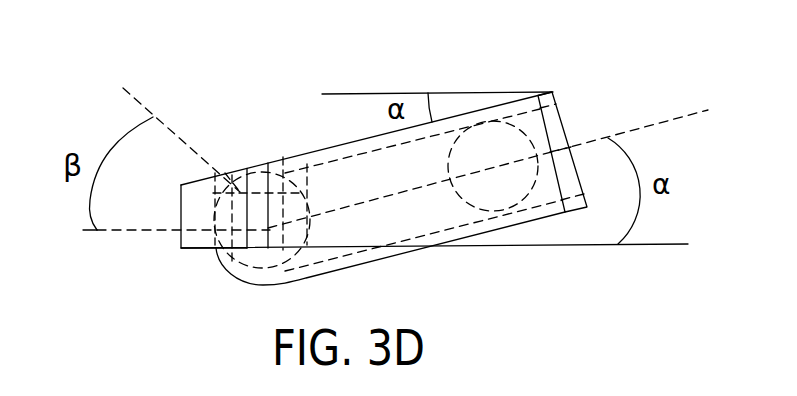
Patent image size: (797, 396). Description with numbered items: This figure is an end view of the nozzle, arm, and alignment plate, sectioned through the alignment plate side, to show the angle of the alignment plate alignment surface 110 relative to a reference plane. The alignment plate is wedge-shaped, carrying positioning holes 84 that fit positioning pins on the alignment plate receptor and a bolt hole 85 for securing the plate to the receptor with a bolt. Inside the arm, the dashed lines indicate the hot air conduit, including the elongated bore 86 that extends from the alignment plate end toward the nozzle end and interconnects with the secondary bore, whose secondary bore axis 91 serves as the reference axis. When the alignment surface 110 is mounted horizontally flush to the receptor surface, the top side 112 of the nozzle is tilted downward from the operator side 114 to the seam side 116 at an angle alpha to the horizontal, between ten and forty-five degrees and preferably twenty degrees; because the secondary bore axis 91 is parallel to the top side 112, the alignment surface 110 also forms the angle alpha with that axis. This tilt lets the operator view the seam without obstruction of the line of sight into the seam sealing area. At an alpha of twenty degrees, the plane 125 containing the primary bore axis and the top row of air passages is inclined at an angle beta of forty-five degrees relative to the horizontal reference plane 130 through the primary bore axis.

The positioning holes 84 is at (253, 166).
The bolt hole 85 is at (283, 157).
The elongated bore 86 is at (576, 117).
The secondary bore axis 91 is at (501, 159).
The alignment surface 110 is at (317, 249).
The top side 112 is at (315, 150).
The operator side 114 is at (558, 92).
The seam side 116 is at (178, 245).
The plane 125 is at (167, 125).
The horizontal reference plane 130 is at (155, 233).